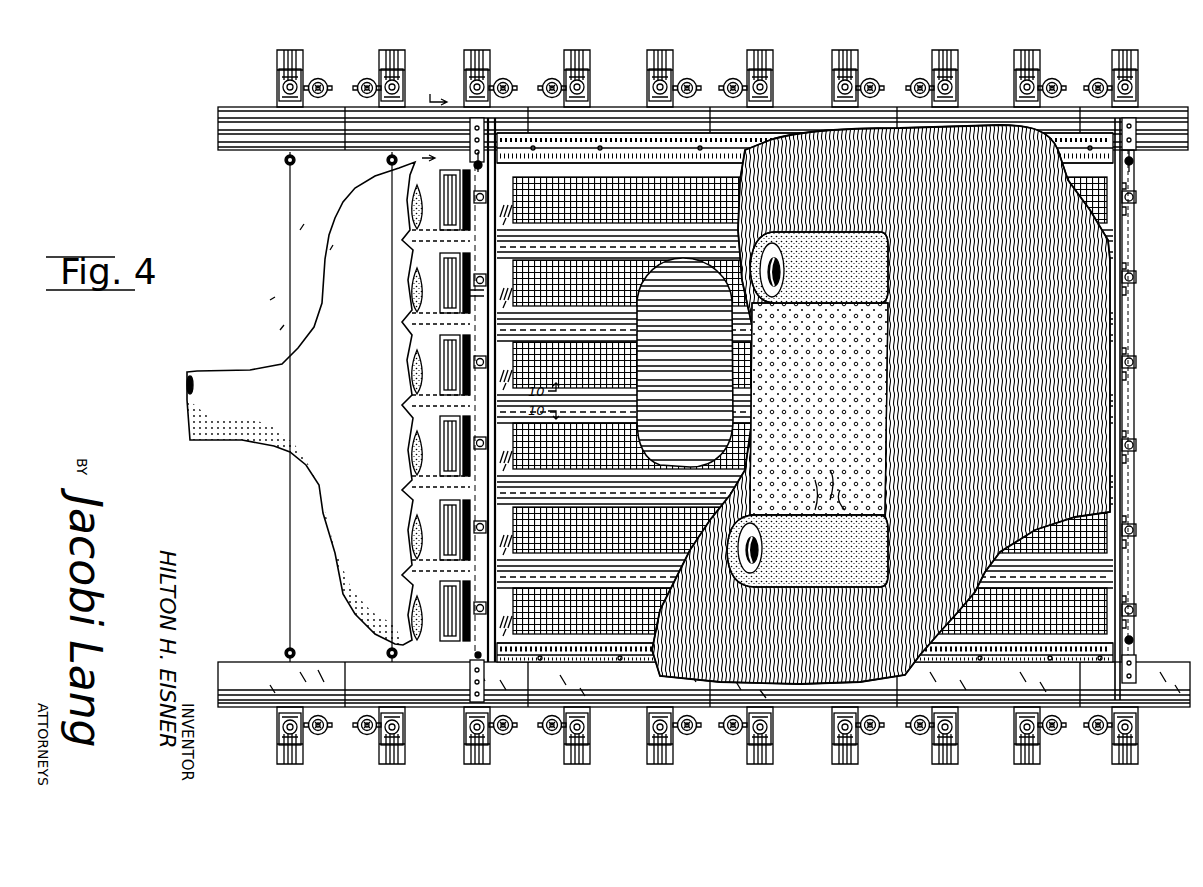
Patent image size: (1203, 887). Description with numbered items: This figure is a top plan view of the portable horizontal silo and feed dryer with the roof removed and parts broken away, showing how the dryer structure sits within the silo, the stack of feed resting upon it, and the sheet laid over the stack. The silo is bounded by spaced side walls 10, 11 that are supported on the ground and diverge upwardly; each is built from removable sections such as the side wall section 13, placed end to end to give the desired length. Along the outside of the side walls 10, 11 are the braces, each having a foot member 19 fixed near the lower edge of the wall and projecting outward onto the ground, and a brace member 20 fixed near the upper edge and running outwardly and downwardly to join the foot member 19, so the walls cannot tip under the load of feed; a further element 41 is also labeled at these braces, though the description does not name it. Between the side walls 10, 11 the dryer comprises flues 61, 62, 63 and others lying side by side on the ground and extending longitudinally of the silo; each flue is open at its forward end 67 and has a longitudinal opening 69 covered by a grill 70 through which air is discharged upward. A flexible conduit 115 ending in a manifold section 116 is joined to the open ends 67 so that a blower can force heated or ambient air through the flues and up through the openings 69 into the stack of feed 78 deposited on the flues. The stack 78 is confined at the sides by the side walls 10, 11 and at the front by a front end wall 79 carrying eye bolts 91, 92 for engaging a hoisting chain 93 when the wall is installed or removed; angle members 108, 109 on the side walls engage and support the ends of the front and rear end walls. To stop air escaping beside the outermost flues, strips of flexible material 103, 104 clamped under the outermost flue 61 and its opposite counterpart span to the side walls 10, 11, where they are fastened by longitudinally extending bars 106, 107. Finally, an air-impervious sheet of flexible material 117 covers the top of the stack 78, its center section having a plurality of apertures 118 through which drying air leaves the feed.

The side wall 10 is at (212, 154).
The side wall 11 is at (213, 675).
The side wall section 13 is at (423, 122).
The foot member 19 is at (1005, 752).
The brace member 20 is at (1125, 765).
The trolley wheel 41 is at (1098, 735).
The flue 61 is at (434, 203).
The flue 62 is at (470, 264).
The flue 63 is at (434, 360).
The open forward end of flue 67 is at (466, 648).
The longitudinal opening 69 is at (480, 578).
The grill 70 is at (414, 618).
The stack of feed 78 is at (1110, 333).
The front end wall 79 is at (470, 292).
The eye bolt 91 is at (470, 318).
The eye bolt 92 is at (480, 500).
The hoisting chain 93 is at (1134, 415).
The strip of flexible material 103 is at (1136, 199).
The strip of flexible material 104 is at (1112, 640).
The longitudinally extending bar 106 is at (605, 160).
The longitudinally extending bar 107 is at (605, 656).
The angle member 108 is at (1138, 150).
The angle member 109 is at (1136, 665).
The flexible conduit 115 is at (247, 378).
The manifold section 116 is at (378, 356).
The sheet of flexible material 117 is at (866, 310).
The apertures 118 is at (835, 500).